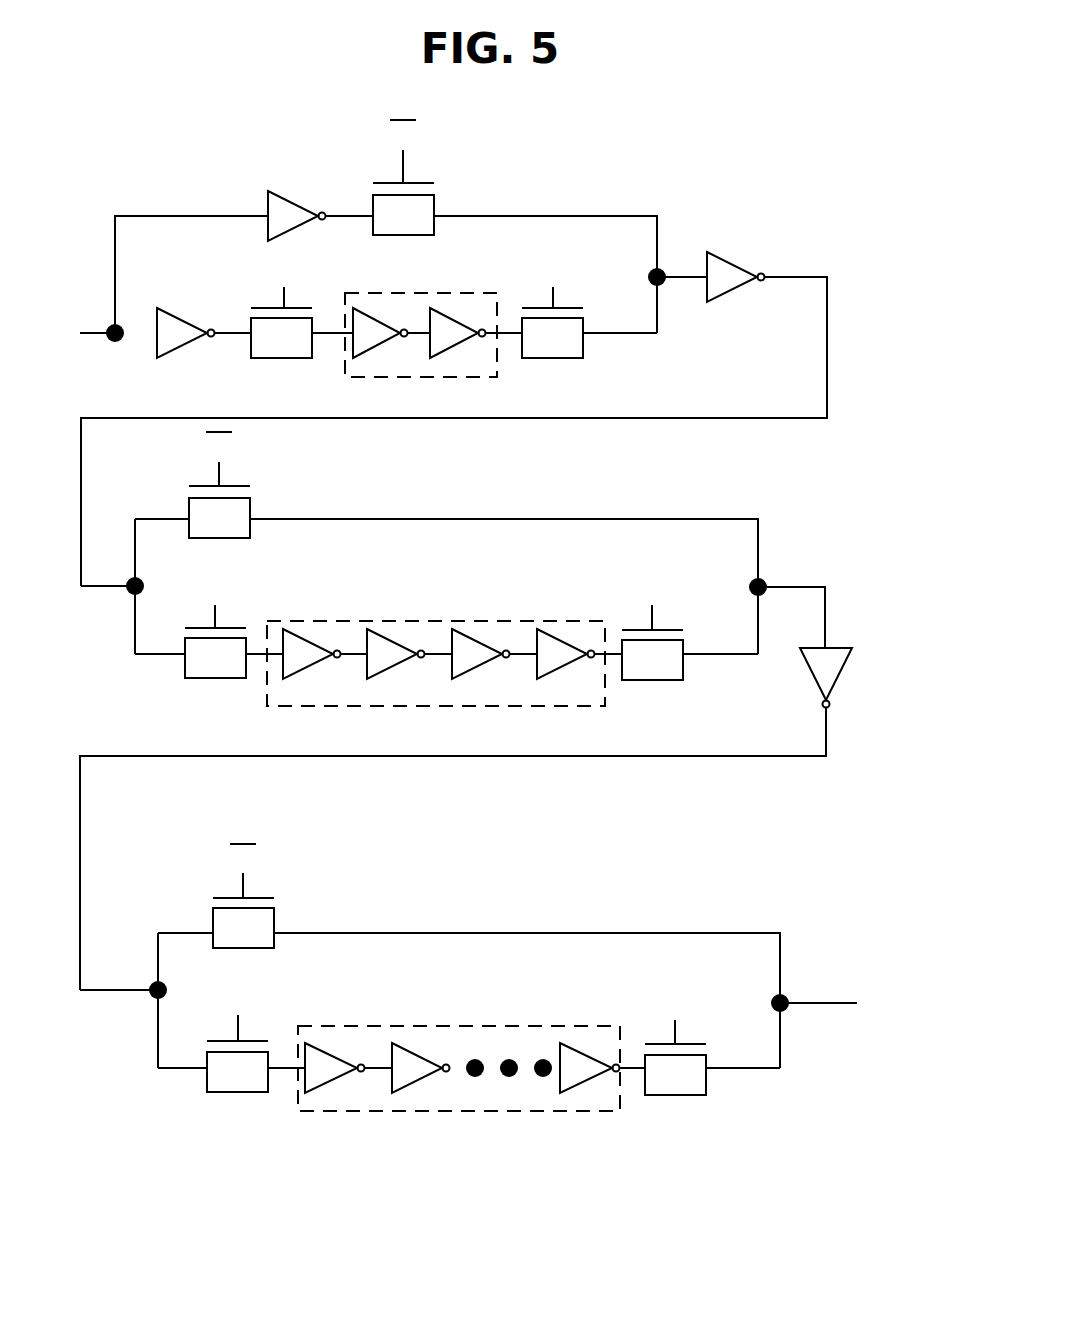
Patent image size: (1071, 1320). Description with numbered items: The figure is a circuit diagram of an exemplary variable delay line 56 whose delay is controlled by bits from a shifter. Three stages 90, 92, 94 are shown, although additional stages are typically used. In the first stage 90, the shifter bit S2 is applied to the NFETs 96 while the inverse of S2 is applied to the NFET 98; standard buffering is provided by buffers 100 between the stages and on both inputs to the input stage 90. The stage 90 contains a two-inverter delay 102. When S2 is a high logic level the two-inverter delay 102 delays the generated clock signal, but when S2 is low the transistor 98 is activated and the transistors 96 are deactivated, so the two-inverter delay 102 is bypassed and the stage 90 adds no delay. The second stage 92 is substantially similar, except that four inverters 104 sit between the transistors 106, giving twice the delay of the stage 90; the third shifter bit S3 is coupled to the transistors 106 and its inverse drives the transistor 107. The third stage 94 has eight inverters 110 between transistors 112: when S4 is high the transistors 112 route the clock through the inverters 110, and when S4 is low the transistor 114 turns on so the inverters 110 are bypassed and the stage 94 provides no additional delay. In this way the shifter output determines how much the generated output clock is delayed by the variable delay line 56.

The variable delay line 56 is at (578, 160).
The first stage 90 is at (700, 218).
The second stage 92 is at (838, 557).
The third stage 94 is at (724, 878).
The NFETs 96 is at (267, 353).
The NFET 98 is at (440, 197).
The buffers 100 is at (280, 207).
The two-inverter delay 102 is at (387, 367).
The four inverters 104 is at (433, 622).
The transistors 106 is at (207, 670).
The transistor 107 is at (252, 502).
The eight inverters 110 is at (365, 1112).
The transistors 112 is at (255, 1042).
The transistor 114 is at (265, 915).